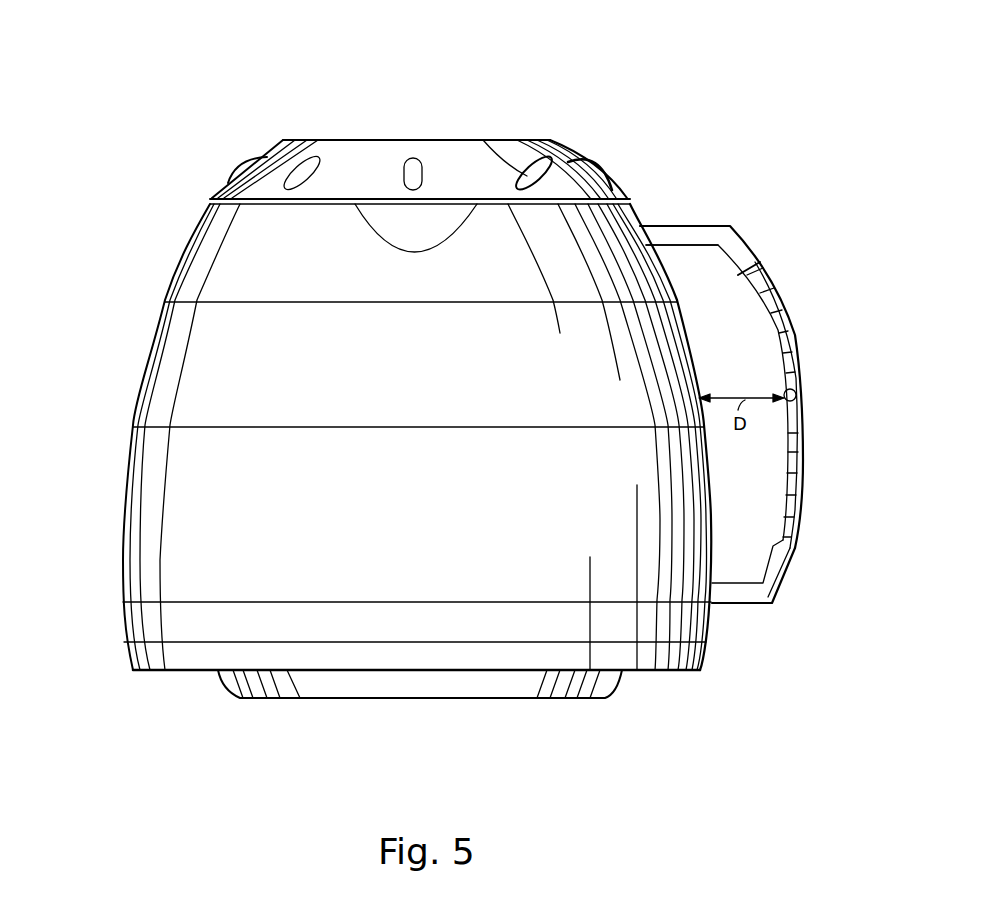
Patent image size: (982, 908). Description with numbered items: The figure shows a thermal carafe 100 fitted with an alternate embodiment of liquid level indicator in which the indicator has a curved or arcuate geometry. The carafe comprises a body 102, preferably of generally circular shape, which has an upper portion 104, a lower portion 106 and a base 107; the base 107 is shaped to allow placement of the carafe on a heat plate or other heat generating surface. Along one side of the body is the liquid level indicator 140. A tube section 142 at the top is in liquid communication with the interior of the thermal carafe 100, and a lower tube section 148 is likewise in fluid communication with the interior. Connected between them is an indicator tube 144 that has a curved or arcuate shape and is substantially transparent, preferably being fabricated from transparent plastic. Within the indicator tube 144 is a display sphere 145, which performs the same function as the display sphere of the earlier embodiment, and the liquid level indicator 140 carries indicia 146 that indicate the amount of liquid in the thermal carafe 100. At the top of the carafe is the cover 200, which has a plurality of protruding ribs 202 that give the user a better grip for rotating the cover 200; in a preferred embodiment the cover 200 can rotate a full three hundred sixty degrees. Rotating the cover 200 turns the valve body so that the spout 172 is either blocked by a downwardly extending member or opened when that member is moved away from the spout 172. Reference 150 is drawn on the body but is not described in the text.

The thermal carafe 100 is at (176, 84).
The body 102 is at (125, 490).
The upper portion 104 is at (182, 262).
The lower portion 106 is at (120, 577).
The base 107 is at (222, 680).
The liquid level indicator 140 is at (766, 410).
The tube section 142 is at (665, 222).
The indicator tube 144 is at (805, 423).
The display sphere 145 is at (802, 393).
The indicia 146 is at (770, 290).
The tube section 148 is at (747, 604).
The body sidewall 150 is at (147, 360).
The spout 172 is at (362, 210).
The cover 200 is at (342, 152).
The protruding ribs 202 is at (235, 170).